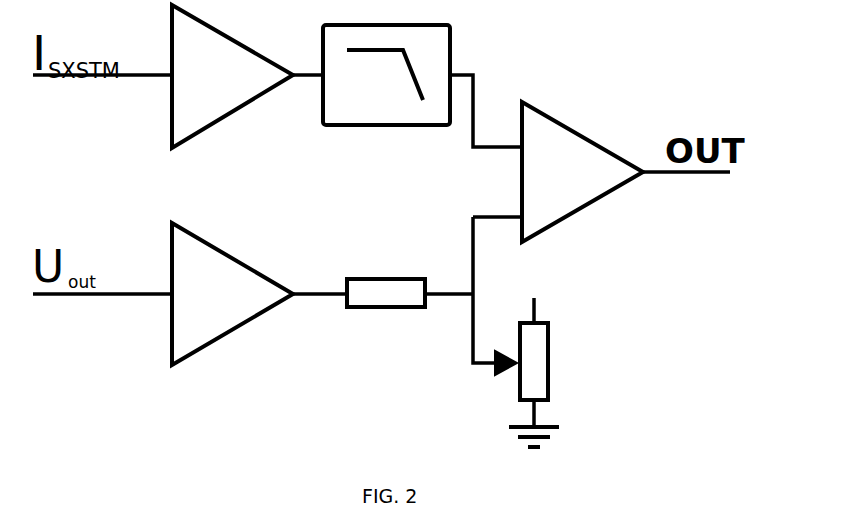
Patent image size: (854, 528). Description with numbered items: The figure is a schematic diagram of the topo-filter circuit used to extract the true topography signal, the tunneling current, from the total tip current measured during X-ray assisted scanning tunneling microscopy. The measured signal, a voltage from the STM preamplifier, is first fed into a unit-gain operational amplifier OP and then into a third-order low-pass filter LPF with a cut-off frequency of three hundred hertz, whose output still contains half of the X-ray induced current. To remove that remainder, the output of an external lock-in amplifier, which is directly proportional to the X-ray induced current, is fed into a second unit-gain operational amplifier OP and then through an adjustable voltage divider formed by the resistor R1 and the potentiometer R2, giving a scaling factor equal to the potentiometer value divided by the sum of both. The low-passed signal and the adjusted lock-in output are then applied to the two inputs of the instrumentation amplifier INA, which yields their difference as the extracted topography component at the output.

The operational amplifier OP is at (232, 185).
The low-pass filter LPF is at (386, 75).
The instrumentation amplifier INA is at (582, 172).
The resistor R1 is at (386, 271).
The potentiometer R2 is at (557, 362).